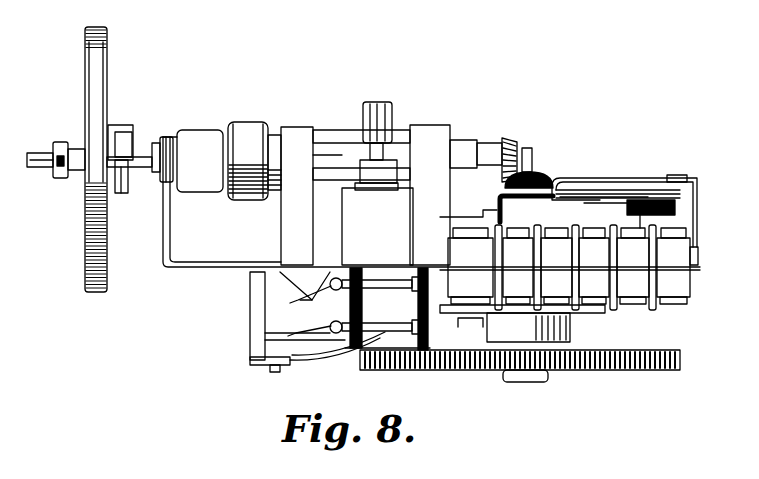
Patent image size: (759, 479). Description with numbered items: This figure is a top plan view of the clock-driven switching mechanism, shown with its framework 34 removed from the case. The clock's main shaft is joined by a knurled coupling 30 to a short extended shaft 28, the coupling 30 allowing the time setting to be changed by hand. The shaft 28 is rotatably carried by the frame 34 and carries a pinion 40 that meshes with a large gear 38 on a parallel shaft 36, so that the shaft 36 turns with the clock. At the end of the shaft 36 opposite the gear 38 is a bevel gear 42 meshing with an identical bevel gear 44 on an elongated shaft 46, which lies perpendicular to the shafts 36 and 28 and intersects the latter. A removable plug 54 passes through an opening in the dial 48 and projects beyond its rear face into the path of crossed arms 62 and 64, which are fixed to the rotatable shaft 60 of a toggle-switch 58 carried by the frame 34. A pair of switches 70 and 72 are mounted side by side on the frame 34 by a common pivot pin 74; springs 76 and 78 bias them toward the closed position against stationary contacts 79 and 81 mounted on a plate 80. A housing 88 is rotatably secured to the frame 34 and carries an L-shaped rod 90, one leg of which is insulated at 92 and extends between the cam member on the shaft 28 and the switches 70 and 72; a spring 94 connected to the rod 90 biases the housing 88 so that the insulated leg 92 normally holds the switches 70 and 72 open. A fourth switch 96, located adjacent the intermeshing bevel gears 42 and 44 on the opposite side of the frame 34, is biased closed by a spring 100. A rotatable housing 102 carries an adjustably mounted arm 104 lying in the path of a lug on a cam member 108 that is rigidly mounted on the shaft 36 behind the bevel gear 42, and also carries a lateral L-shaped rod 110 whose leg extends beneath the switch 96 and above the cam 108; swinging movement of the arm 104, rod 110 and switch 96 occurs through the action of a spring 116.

The extended shaft 28 is at (360, 355).
The knurled coupling 30 is at (363, 116).
The framework 34 is at (431, 202).
The shaft 36 is at (533, 152).
The large gear 38 is at (625, 368).
The pinion 40 is at (370, 360).
The bevel gear 42 is at (567, 178).
The bevel gear 44 is at (508, 142).
The elongated shaft 46 is at (40, 168).
The dial 48 is at (98, 60).
The removable plug 54 is at (60, 142).
The toggle-switch 58 is at (190, 134).
The rotatable shaft 60 is at (150, 172).
The crossed arm 62 is at (118, 193).
The crossed arm 64 is at (130, 136).
The switch 70 is at (388, 278).
The switch 72 is at (410, 370).
The pivot pin 74 is at (470, 328).
The spring 76 is at (462, 283).
The spring 78 is at (452, 370).
The stationary contact 79 is at (333, 280).
The plate 80 is at (290, 262).
The stationary contact 81 is at (333, 320).
The housing 88 is at (257, 338).
The L-shaped rod 90 is at (307, 348).
The insulated leg 92 is at (355, 268).
The spring 94 is at (325, 363).
The switch 96 is at (519, 228).
The spring 100 is at (554, 228).
The rotatable housing 102 is at (690, 212).
The adjustably mounted arm 104 is at (596, 192).
The cam member 108 is at (484, 200).
The L-shaped rod 110 is at (655, 183).
The spring 116 is at (612, 182).